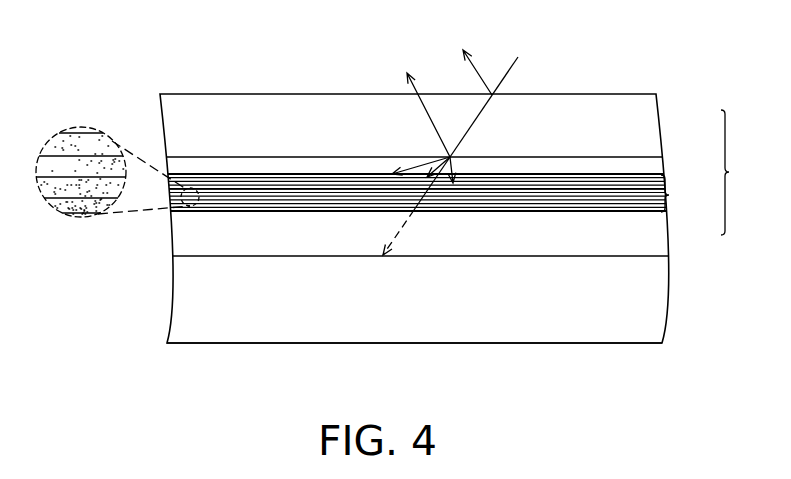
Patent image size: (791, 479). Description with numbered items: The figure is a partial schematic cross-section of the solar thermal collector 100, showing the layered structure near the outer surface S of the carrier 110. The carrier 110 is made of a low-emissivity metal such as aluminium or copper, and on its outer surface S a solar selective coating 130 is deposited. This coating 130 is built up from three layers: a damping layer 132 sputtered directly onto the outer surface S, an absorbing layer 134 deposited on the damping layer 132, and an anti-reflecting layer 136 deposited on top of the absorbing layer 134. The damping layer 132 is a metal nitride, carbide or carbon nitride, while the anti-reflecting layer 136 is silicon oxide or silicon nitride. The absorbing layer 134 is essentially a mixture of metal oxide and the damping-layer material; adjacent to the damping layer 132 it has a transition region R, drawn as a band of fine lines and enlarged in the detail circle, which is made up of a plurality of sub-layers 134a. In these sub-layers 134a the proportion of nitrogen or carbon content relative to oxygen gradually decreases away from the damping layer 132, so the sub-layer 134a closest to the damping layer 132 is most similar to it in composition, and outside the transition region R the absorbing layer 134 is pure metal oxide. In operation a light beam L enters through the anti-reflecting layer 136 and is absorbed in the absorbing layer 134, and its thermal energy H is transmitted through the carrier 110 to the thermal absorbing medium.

The display device 100 is at (723, 401).
The carrier 110 is at (642, 298).
The solar selective coating 130 is at (744, 172).
The damping layer 132 is at (632, 232).
The absorbing layer 134 is at (607, 180).
The sub-layers 134a is at (62, 143).
The anti-reflecting layer 136 is at (638, 130).
The transition region R is at (675, 193).
The outer surface S is at (625, 256).
The light beam L is at (464, 106).
The thermal energy H is at (416, 206).